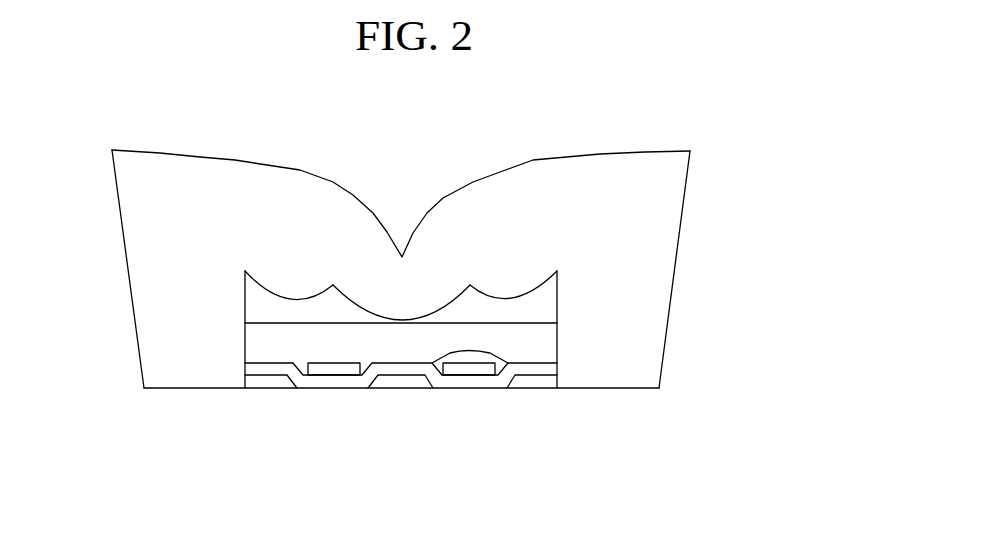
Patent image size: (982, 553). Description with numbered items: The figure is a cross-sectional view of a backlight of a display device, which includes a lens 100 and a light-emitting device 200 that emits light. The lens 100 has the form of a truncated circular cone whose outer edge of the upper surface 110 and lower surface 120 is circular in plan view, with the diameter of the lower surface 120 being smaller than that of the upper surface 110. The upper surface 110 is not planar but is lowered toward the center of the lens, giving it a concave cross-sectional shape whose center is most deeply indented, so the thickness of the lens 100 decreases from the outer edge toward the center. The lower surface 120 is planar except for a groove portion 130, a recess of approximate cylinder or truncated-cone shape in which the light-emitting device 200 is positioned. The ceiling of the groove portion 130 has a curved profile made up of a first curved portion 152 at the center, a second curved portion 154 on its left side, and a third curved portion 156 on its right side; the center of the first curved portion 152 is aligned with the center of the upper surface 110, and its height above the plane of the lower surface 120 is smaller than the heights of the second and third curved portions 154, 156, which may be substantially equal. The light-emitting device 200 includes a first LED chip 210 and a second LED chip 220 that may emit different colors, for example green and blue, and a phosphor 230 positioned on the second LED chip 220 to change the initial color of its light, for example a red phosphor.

The lens 100 is at (444, 277).
The upper surface 110 is at (510, 168).
The lower surface 120 is at (183, 388).
The groove portion 130 is at (406, 364).
The first curved portion 152 is at (402, 322).
The second curved portion 154 is at (289, 300).
The third curved portion 156 is at (510, 298).
The light-emitting device 200 is at (401, 407).
The first LED chip 210 is at (333, 368).
The second LED chip 220 is at (475, 370).
The phosphor 230 is at (458, 358).